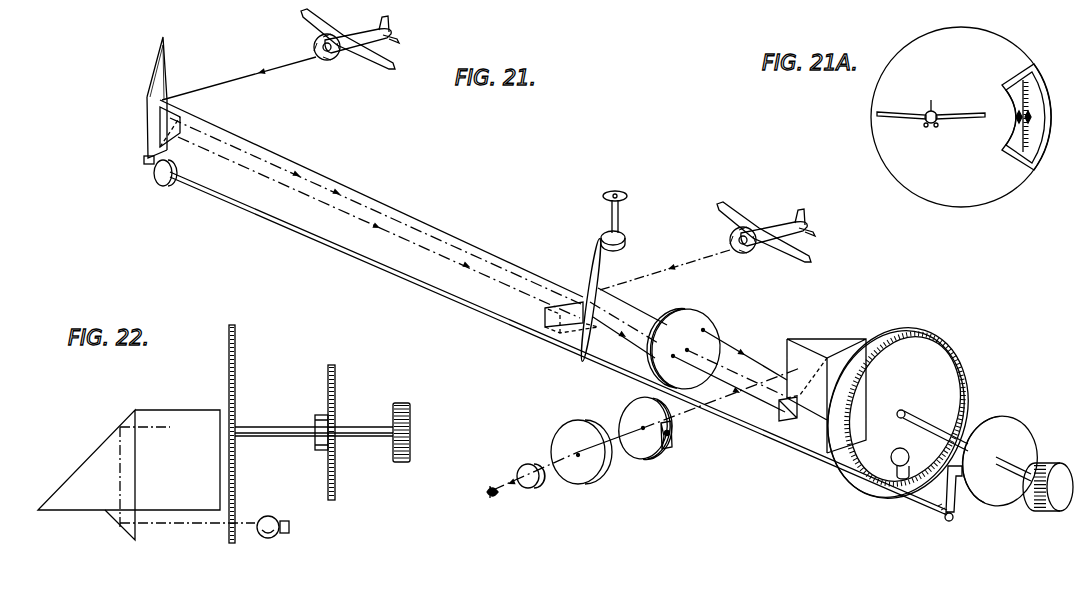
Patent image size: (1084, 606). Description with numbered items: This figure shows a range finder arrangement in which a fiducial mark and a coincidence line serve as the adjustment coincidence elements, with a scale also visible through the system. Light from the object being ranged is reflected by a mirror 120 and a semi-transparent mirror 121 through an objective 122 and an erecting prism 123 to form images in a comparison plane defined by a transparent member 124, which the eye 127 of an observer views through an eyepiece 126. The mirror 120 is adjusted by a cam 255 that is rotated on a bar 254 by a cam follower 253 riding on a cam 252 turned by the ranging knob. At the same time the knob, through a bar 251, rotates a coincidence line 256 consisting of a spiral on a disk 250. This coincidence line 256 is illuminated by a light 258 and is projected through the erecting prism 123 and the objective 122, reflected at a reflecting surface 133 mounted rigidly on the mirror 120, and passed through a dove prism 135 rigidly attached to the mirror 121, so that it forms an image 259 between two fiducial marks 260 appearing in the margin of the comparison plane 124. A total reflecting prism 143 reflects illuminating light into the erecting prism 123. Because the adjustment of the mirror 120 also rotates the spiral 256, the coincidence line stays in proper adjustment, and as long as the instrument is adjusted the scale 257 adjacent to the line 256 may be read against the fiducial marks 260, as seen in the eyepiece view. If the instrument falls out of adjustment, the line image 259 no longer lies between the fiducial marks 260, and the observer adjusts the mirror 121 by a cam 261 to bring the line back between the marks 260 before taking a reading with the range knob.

In FIG. 21, the mirror 120 is at (157, 57).
In FIG. 21, the reflecting surface 133 is at (165, 145).
In FIG. 21, the cam 255 is at (160, 187).
In FIG. 21, the bar 254 is at (398, 280).
In FIG. 21, the semi-transparent mirror 121 is at (596, 253).
In FIG. 21, the cam 261 is at (622, 235).
In FIG. 21, the dove prism 135 is at (545, 313).
In FIG. 21, the objective 122 is at (700, 318).
In FIG. 21, the erecting prism 123 is at (826, 343).
In FIG. 22, the erecting prism 123 is at (165, 418).
In FIG. 21, the total reflecting prism 143 is at (783, 425).
In FIG. 22, the total reflecting prism 143 is at (137, 538).
In FIG. 21, the disk 250 is at (961, 352).
In FIG. 22, the disk 250 is at (237, 378).
In FIG. 21, the coincidence line 256 is at (927, 331).
In FIG. 21, the scale 257 is at (940, 346).
In FIG. 21, the bar 251 is at (966, 430).
In FIG. 22, the bar 251 is at (268, 430).
In FIG. 21, the cam 252 is at (1020, 430).
In FIG. 22, the cam 252 is at (337, 380).
In FIG. 21, the cam follower 253 is at (957, 510).
In FIG. 21, the light 258 is at (893, 466).
In FIG. 22, the light 258 is at (268, 540).
In FIG. 21, the transparent member 124 is at (645, 458).
In FIG. 21, the fiducial marks 260 is at (672, 434).
In FIG. 21A, the fiducial marks 260 is at (1029, 112).
In FIG. 21, the image 259 is at (672, 447).
In FIG. 21A, the image 259 is at (1036, 162).
In FIG. 21, the eyepiece 126 is at (589, 481).
In FIG. 21, the eye 127 is at (492, 499).